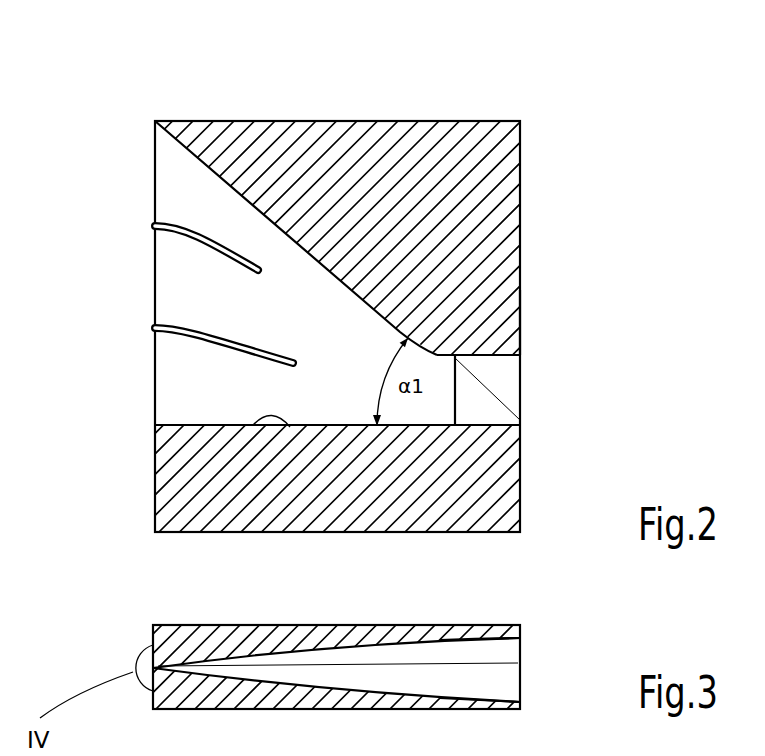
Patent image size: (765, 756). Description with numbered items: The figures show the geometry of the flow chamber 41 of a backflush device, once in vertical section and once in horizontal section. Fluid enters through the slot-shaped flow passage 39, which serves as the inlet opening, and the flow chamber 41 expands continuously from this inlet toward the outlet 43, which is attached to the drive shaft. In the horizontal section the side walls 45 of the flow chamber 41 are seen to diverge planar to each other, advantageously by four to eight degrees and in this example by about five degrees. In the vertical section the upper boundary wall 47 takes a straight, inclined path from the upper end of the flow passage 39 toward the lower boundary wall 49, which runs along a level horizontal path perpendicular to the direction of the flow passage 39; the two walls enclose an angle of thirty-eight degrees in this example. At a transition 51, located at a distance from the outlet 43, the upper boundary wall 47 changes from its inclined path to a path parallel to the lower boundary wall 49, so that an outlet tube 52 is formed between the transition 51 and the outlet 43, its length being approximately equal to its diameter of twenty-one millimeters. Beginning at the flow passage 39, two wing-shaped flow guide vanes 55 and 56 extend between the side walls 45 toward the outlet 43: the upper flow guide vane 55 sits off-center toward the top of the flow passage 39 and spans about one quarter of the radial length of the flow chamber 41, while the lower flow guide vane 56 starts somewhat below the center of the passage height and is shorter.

In FIG. 2, the flow passage 39 is at (155, 178).
In FIG. 3, the flow passage 39 is at (153, 668).
In FIG. 2, the flow chamber 41 is at (363, 250).
In FIG. 3, the flow chamber 41 is at (455, 670).
In FIG. 2, the outlet 43 is at (521, 364).
In FIG. 3, the outlet 43 is at (520, 640).
In FIG. 3, the side walls 45 is at (366, 647).
In FIG. 2, the upper boundary wall 47 is at (330, 308).
In FIG. 2, the lower boundary wall 49 is at (290, 427).
In FIG. 2, the transition 51 is at (520, 308).
In FIG. 2, the outlet tube 52 is at (483, 425).
In FIG. 2, the flow guide vane 55 is at (207, 243).
In FIG. 2, the lower flow guide vane 56 is at (215, 338).